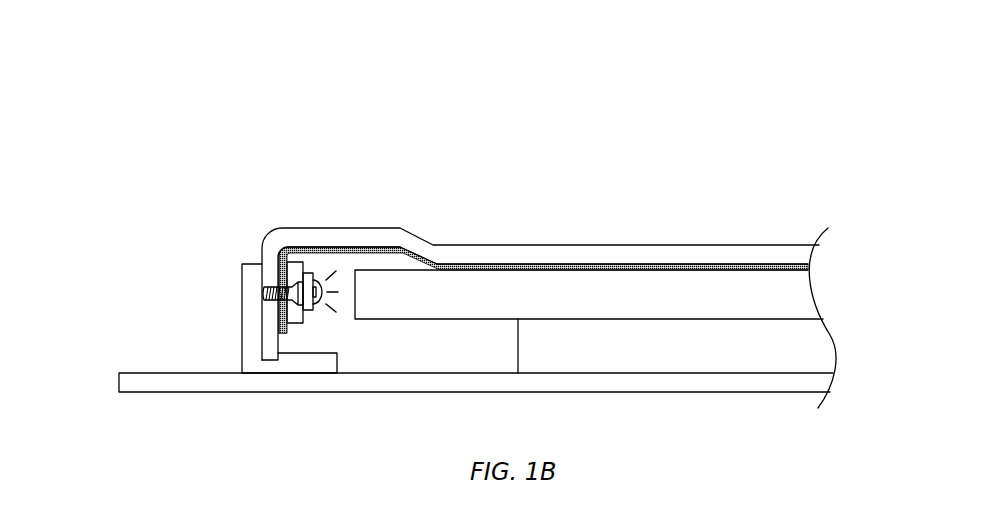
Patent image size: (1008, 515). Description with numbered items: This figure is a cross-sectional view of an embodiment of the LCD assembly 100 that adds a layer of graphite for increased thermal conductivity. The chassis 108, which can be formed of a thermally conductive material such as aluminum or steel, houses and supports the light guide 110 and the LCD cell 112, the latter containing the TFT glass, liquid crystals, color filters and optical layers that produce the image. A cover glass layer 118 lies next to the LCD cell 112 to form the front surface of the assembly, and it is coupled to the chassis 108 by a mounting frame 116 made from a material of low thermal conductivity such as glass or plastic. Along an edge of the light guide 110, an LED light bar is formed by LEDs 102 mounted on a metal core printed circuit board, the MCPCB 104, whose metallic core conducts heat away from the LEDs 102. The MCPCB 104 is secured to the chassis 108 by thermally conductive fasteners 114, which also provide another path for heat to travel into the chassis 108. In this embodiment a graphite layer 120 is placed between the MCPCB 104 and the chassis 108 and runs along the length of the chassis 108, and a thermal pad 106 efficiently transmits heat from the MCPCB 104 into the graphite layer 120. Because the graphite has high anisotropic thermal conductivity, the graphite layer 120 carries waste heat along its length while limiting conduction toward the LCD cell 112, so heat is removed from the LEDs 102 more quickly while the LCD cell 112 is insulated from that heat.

The LCD assembly 100 is at (176, 80).
The LEDs 102 is at (310, 273).
The metal core printed circuit board (MCPCB) 104 is at (297, 260).
The thermal pad 106 is at (287, 254).
The chassis 108 is at (430, 245).
The light guide 110 is at (815, 292).
The LCD cell 112 is at (835, 348).
The fasteners 114 is at (267, 290).
The mounting frame 116 is at (242, 320).
The cover glass layer 118 is at (119, 380).
The graphite layer 120 is at (440, 263).